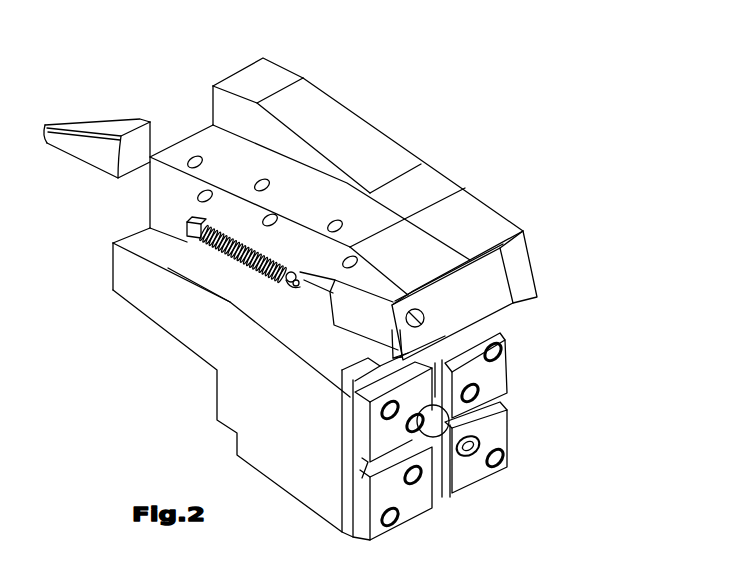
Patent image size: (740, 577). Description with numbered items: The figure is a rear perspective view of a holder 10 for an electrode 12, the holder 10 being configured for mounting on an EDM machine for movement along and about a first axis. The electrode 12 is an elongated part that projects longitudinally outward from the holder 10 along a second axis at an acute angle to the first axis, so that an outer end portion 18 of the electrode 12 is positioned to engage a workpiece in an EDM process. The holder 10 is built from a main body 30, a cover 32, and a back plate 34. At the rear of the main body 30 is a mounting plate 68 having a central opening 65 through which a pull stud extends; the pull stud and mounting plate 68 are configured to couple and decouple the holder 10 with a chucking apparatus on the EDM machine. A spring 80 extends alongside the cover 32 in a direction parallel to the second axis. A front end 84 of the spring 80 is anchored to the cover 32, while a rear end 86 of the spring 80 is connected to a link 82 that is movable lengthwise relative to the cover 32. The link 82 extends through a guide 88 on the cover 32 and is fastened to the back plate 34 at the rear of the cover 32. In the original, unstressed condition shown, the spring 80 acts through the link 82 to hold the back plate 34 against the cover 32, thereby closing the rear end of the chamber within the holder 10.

The holder 10 is at (212, 52).
The electrode 12 is at (158, 135).
The outer end portion 18 is at (98, 124).
The main body 30 is at (337, 123).
The cover 32 is at (362, 208).
The back plate 34 is at (497, 290).
The front end 84 is at (147, 230).
The spring 80 is at (248, 273).
The rear end 86 is at (300, 288).
The link 82 is at (317, 290).
The guide 88 is at (365, 322).
The mounting plate 68 is at (502, 377).
The central opening 65 is at (448, 463).